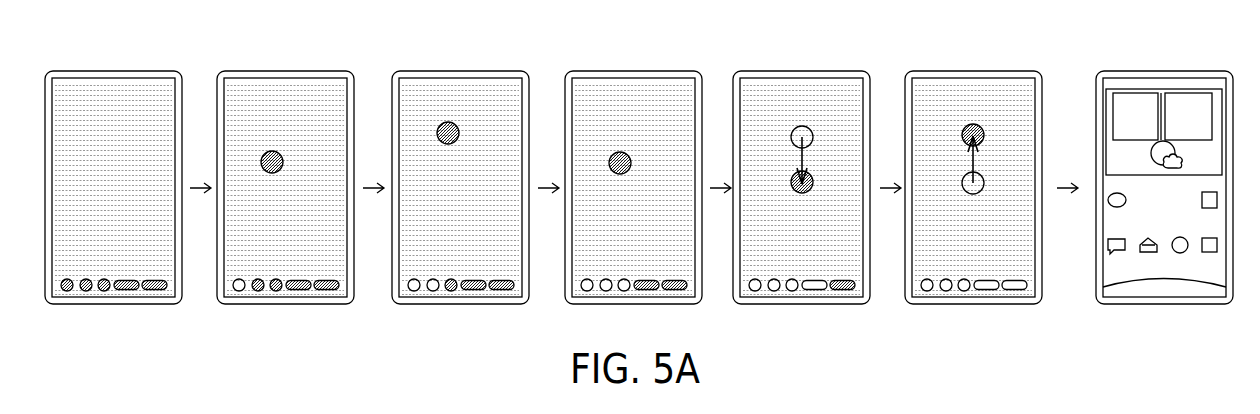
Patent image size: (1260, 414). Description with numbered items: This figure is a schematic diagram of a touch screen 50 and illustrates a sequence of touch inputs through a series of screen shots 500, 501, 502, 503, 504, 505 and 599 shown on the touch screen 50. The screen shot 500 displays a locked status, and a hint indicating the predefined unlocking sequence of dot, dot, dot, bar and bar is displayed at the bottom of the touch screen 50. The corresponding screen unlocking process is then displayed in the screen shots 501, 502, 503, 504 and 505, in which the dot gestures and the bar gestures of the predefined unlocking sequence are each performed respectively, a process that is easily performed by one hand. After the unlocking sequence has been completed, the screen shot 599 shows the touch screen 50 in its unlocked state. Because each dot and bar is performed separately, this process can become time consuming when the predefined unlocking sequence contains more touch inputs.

The touch screen 50 is at (639, 203).
The screen shot 500 is at (136, 154).
The screen shot 501 is at (307, 154).
The screen shot 502 is at (481, 154).
The screen shot 503 is at (655, 154).
The screen shot 504 is at (822, 154).
The screen shot 505 is at (1012, 48).
The screen shot 599 is at (1090, 68).